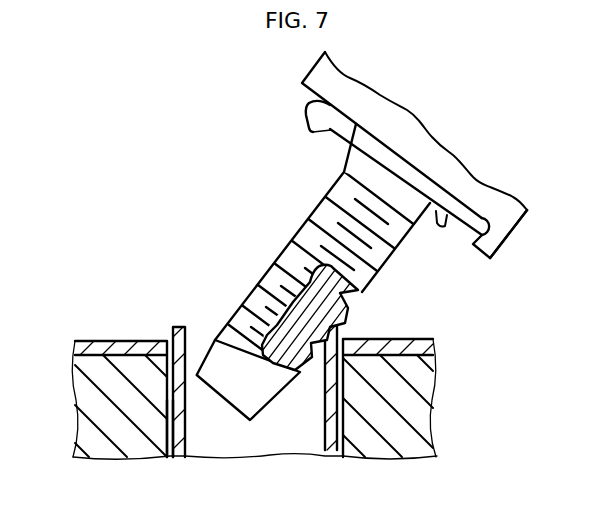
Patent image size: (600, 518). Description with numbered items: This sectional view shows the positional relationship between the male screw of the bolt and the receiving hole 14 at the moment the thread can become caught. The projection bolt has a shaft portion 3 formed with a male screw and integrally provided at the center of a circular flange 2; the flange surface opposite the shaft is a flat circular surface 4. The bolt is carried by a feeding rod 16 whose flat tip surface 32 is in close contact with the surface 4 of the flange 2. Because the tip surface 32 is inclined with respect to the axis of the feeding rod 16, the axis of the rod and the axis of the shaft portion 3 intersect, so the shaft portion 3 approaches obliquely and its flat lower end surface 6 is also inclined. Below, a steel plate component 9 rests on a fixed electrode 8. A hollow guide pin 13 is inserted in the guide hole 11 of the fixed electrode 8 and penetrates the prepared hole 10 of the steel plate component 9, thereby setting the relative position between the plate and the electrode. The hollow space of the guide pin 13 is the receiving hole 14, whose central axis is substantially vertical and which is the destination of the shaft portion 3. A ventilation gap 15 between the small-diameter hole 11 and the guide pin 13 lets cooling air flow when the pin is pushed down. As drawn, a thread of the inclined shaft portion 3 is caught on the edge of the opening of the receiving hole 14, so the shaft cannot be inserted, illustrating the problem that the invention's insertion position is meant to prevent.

The circular flange 2 is at (380, 153).
The shaft portion 3 is at (301, 228).
The flat circular surface 4 is at (413, 163).
The lower end surface 6 is at (211, 390).
The fixed electrode 8 is at (404, 397).
The steel plate component 9 is at (118, 341).
The prepared hole 10 is at (176, 327).
The guide hole 11 is at (327, 428).
The guide pin 13 is at (165, 405).
The receiving hole 14 is at (270, 436).
The ventilation gap 15 is at (167, 433).
The feeding rod 16 is at (524, 236).
The tip surface 32 is at (348, 130).